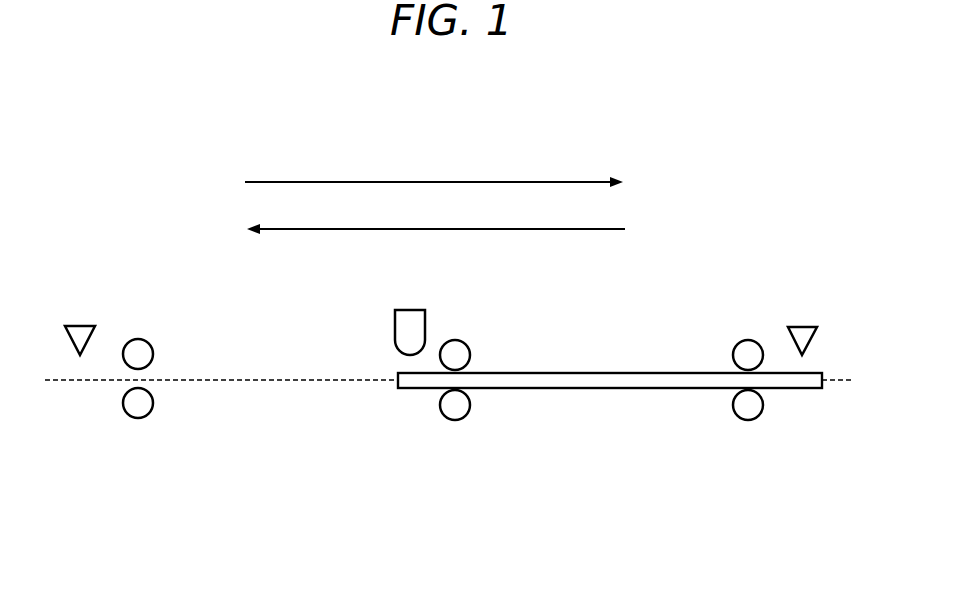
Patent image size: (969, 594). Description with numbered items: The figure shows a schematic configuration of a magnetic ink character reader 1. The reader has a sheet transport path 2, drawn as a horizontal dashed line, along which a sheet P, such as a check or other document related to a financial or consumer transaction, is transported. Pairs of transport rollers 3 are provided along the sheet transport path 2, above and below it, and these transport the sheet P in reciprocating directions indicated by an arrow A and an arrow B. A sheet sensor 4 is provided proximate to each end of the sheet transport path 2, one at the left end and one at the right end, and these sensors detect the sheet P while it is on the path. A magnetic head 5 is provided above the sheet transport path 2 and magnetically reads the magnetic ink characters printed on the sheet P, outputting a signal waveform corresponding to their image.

The magnetic ink character reader 1 is at (741, 129).
The sheet transport path 2 is at (240, 378).
The transport rollers 3 is at (140, 338).
The sheet sensor 4 is at (80, 325).
The magnetic head 5 is at (411, 308).
The sheet P is at (570, 372).
The arrow A is at (434, 172).
The arrow B is at (436, 219).